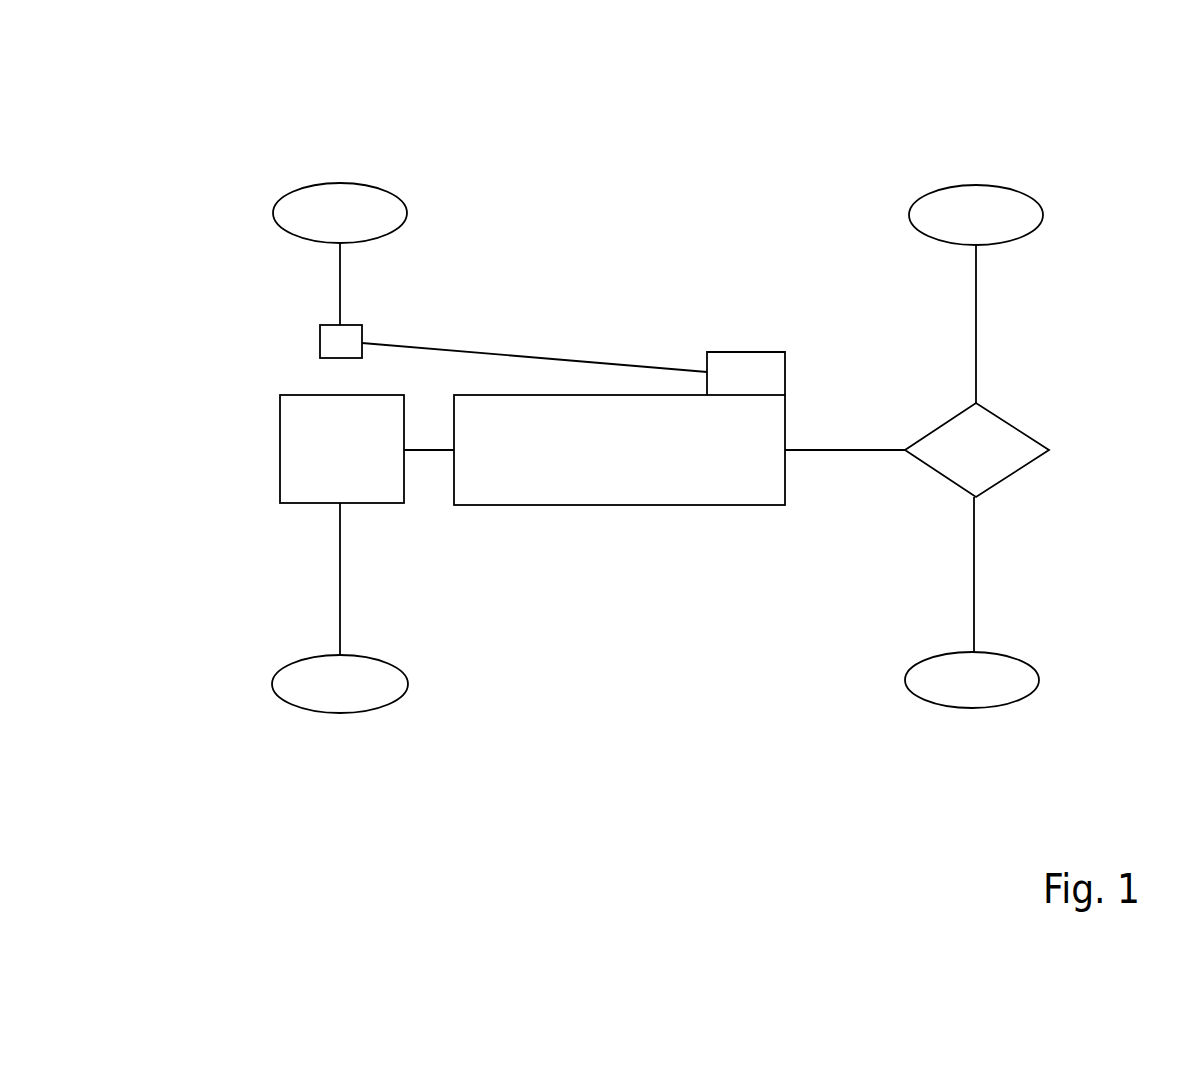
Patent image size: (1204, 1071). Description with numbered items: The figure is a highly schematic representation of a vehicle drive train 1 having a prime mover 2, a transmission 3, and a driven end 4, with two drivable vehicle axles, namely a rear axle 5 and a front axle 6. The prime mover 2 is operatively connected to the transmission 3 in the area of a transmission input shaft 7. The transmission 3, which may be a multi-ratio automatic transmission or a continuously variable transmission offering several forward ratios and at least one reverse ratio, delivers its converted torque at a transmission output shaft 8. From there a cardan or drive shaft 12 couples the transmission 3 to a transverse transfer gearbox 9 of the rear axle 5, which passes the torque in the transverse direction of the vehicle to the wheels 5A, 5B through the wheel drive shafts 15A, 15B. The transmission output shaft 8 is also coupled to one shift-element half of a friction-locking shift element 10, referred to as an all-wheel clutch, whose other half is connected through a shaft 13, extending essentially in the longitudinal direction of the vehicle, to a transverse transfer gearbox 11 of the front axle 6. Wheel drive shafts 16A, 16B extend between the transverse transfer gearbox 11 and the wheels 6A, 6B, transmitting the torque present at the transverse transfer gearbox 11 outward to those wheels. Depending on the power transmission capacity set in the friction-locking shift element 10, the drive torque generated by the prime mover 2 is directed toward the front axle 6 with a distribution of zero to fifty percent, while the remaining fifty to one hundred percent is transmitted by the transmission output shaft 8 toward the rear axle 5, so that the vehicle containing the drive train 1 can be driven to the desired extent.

The vehicle drive train 1 is at (672, 162).
The prime mover 2 is at (288, 440).
The transmission 3 is at (560, 492).
The driven end 4 is at (1097, 250).
The vehicle axle (rear axle) 5 is at (868, 707).
The wheel 5A is at (970, 200).
The wheel 5B is at (1008, 665).
The vehicle axle (front axle) 6 is at (250, 722).
The wheel 6A is at (340, 195).
The wheel 6B is at (317, 707).
The transmission input shaft 7 is at (429, 450).
The transmission output shaft 8 is at (798, 447).
The transverse transfer gearbox 9 is at (1007, 442).
The friction-locking shift element 10 is at (747, 345).
The transverse transfer gearbox 11 is at (352, 335).
The cardan shaft 12 is at (878, 447).
The shaft 13 is at (512, 353).
The wheel drive shaft 15A is at (980, 322).
The wheel drive shaft 15B is at (973, 567).
The wheel drive shaft 16A is at (340, 287).
The wheel drive shaft 16B is at (340, 578).